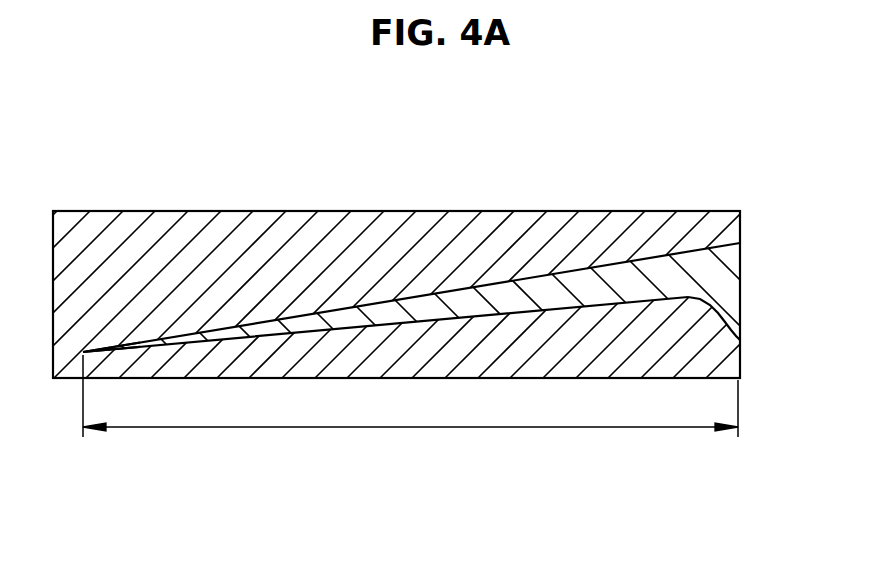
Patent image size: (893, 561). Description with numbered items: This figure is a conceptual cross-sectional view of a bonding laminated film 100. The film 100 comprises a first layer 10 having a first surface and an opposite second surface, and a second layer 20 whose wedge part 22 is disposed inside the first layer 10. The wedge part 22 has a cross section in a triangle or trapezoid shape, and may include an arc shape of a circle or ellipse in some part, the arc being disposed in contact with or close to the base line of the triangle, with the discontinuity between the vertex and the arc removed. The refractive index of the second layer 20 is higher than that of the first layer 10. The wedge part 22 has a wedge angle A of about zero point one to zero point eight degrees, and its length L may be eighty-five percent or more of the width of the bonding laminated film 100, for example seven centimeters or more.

The bonding laminated film 100 is at (155, 176).
The first layer 10 is at (695, 224).
The wedge part 22 is at (606, 254).
The second layer 20 is at (720, 270).
The wedge angle A is at (258, 316).
The length of the wedge part L is at (410, 396).